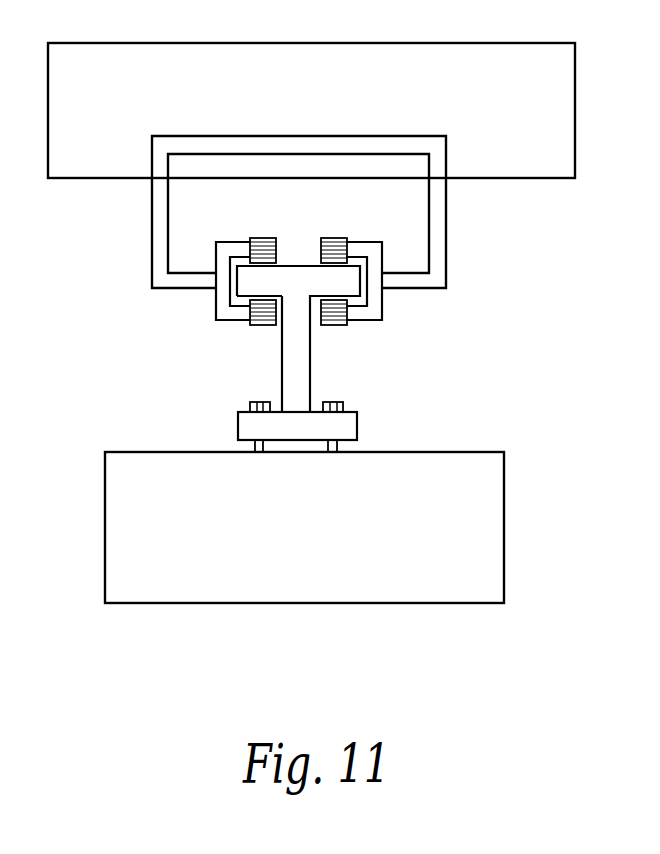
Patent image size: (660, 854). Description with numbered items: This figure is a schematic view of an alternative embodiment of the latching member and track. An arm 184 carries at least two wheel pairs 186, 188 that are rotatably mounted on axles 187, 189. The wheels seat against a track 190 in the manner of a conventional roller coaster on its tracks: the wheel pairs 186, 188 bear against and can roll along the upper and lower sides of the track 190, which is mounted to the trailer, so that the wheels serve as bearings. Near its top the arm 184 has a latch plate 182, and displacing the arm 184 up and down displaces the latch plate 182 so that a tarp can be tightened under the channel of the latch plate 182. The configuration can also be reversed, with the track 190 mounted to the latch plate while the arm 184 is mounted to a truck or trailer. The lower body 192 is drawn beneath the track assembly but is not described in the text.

The latch plate 182 is at (543, 163).
The arm 184 is at (440, 246).
The wheel pair 186 is at (347, 257).
The axle 187 is at (360, 250).
The wheel pair 188 is at (250, 258).
The axle 189 is at (226, 242).
The track 190 is at (295, 368).
The base / lower body 192 is at (478, 575).